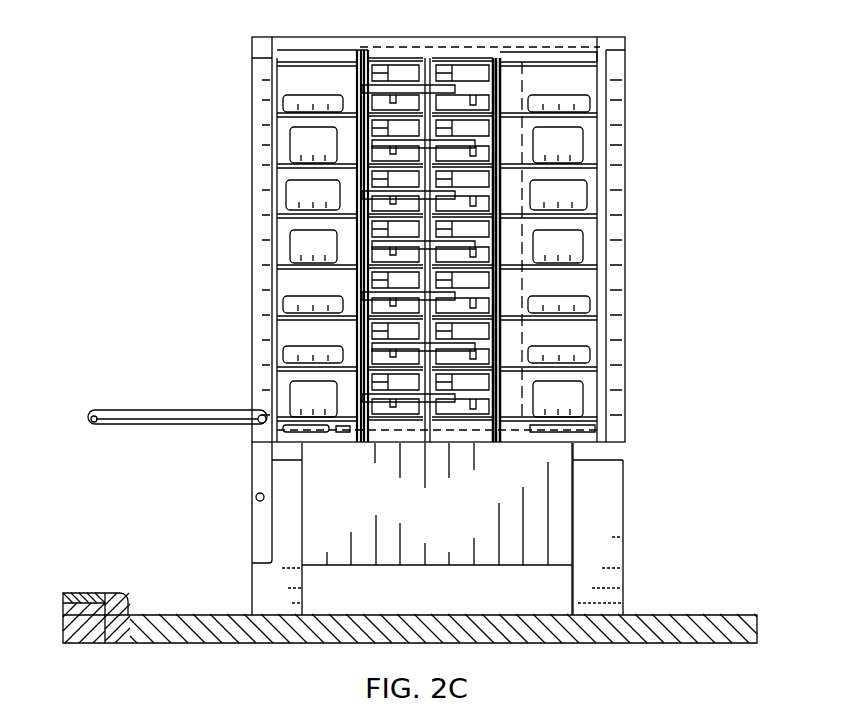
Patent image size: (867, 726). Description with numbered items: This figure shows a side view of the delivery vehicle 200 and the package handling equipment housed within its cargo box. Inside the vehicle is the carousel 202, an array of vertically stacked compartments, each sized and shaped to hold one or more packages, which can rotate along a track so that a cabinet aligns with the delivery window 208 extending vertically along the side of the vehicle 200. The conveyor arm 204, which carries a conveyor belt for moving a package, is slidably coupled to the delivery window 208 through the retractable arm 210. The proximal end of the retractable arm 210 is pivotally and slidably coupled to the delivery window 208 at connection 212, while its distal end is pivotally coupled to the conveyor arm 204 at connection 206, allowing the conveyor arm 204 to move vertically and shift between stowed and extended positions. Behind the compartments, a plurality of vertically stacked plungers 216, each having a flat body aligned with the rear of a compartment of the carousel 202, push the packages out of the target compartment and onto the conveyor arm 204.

The vehicle 200 is at (168, 52).
The carousel 202 is at (587, 75).
The conveyor arm 204 is at (113, 410).
The connection 206 is at (263, 413).
The delivery window 208 is at (257, 197).
The retractable arm 210 is at (257, 438).
The connection 212 is at (253, 500).
The plungers 216 is at (630, 387).